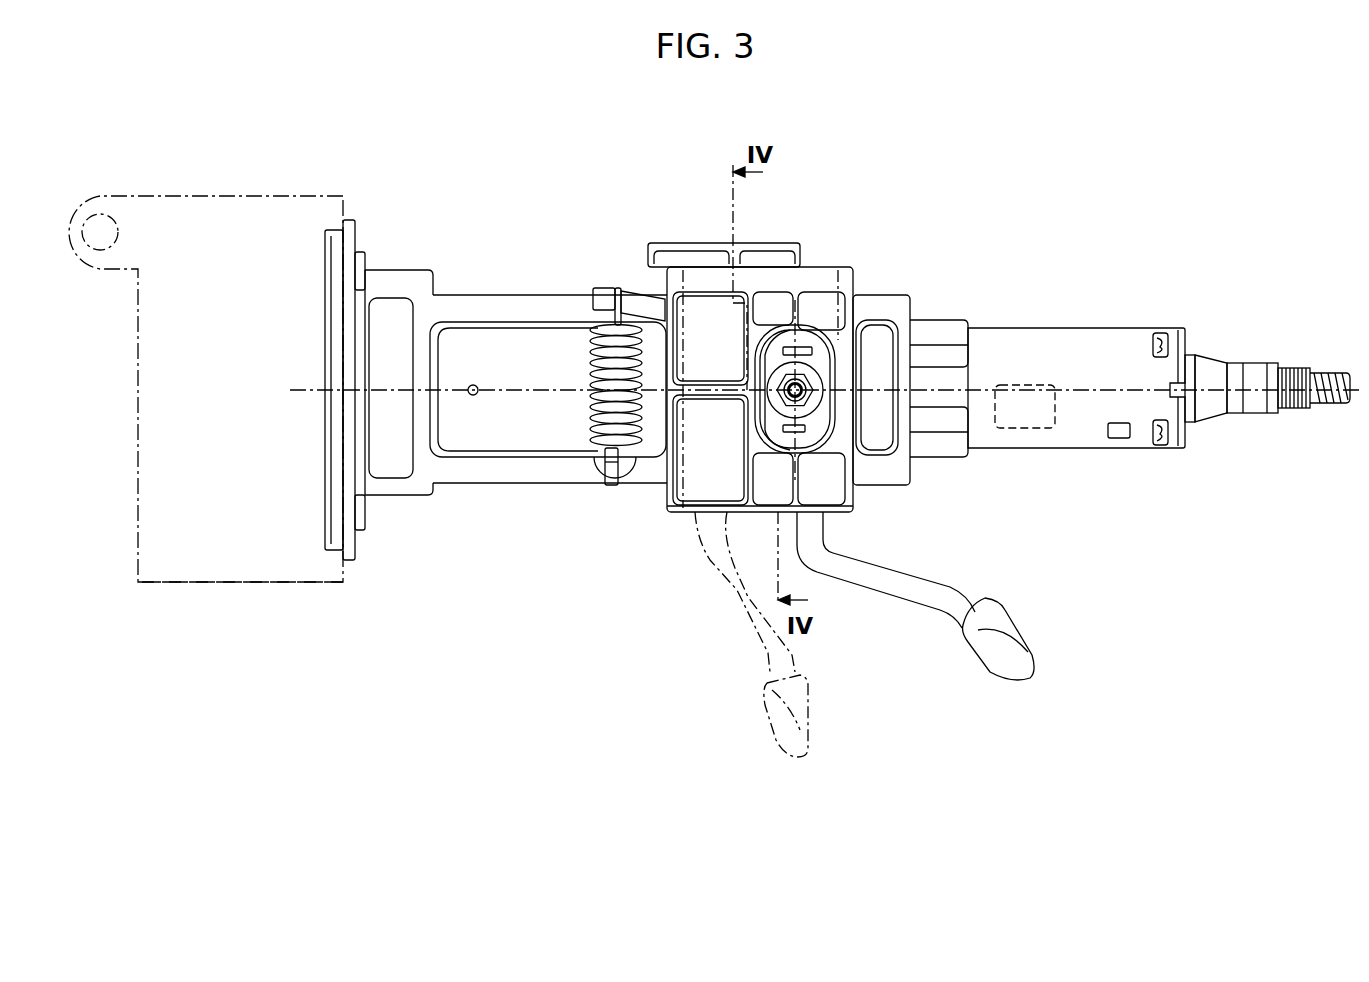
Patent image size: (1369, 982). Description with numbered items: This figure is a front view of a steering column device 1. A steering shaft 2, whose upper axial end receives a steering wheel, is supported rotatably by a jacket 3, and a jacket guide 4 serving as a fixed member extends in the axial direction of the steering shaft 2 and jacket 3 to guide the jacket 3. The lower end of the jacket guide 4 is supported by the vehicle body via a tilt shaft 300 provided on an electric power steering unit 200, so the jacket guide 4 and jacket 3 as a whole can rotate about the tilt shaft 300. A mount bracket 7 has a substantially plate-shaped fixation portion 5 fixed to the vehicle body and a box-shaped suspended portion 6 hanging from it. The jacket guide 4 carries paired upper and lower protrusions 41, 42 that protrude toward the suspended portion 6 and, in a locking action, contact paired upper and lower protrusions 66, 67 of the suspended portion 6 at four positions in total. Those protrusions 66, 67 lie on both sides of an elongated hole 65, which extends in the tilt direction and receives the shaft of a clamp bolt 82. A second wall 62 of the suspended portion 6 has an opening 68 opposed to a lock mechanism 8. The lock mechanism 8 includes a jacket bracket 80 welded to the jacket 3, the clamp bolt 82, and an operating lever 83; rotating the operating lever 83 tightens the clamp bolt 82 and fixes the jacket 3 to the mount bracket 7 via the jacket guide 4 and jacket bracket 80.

The steering column device 1 is at (949, 198).
The steering shaft 2 is at (1207, 362).
The jacket 3 is at (1068, 330).
The jacket guide 4 is at (553, 282).
The upper protrusion of jacket guide 41 is at (488, 296).
The lower protrusion of jacket guide 42 is at (478, 484).
The fixation portion 5 is at (781, 245).
The suspended portion 6 is at (838, 267).
The mount bracket 7 is at (780, 186).
The lock mechanism 8 is at (828, 410).
The second wall 62 is at (690, 456).
The elongated hole 65 is at (812, 352).
The upper protrusion of suspended portion 66 is at (668, 340).
The lower protrusion of suspended portion 67 is at (866, 292).
The opening 68 is at (822, 478).
The jacket bracket 80 is at (937, 322).
The clamp bolt 82 is at (770, 402).
The operating lever 83 is at (915, 598).
The electric power steering unit 200 is at (298, 586).
The tilt shaft 300 is at (98, 212).